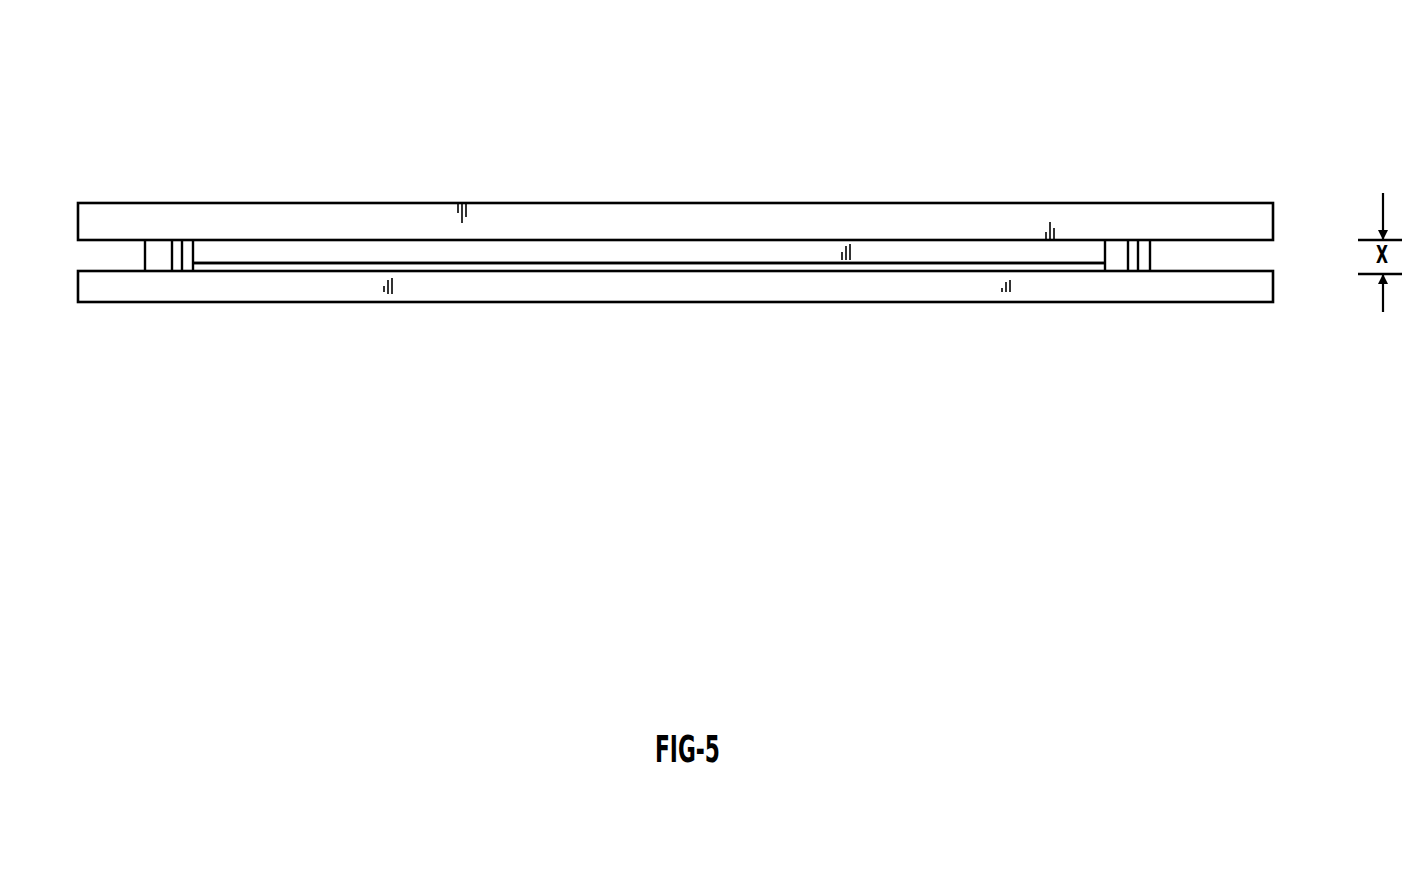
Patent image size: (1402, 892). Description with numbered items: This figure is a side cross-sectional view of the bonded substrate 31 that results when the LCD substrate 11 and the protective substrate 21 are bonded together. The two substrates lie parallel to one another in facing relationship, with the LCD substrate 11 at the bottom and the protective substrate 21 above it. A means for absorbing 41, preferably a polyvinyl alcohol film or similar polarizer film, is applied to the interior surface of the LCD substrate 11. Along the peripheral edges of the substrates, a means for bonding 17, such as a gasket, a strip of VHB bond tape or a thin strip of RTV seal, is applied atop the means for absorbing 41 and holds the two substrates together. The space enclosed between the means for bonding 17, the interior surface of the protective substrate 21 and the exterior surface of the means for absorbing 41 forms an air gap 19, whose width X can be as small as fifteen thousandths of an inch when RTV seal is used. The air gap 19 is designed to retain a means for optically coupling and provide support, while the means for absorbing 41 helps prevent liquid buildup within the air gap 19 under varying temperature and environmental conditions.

The bonded substrate 31 is at (977, 105).
The protective substrate 21 is at (628, 217).
The LCD substrate 11 is at (811, 292).
The means for bonding 17 is at (161, 260).
The air gap 19 is at (471, 255).
The means for absorbing 41 is at (958, 264).